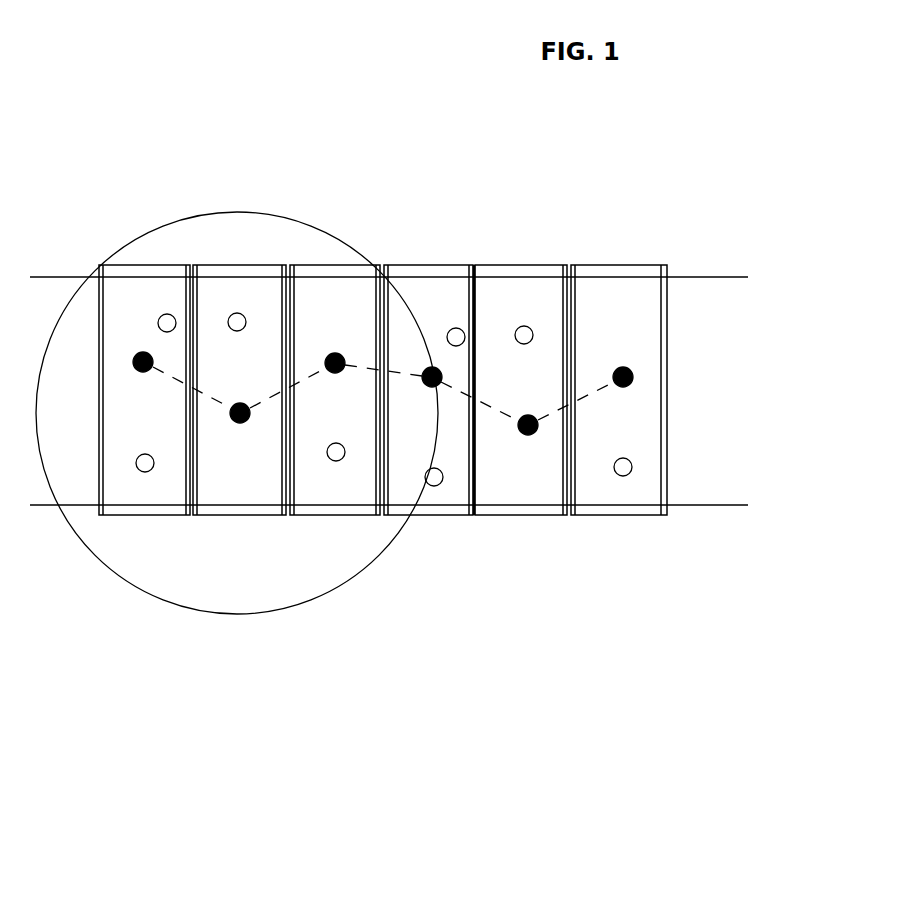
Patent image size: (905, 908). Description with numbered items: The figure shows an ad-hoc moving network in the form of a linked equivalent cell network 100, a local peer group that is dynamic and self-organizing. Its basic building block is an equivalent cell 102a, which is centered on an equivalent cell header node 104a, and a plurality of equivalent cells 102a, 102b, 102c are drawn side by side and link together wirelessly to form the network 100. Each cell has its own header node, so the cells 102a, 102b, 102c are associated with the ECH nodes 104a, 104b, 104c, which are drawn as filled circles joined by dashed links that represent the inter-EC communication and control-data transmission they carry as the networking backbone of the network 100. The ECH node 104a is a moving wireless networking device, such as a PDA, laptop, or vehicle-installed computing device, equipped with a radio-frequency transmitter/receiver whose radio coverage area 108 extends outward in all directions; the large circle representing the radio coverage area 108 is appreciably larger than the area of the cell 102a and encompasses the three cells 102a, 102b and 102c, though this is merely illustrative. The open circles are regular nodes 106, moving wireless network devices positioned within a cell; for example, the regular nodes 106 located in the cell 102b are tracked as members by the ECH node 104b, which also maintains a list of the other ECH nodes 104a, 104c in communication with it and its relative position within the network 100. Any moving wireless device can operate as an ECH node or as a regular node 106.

The linked equivalent cell network 100 is at (389, 359).
The equivalent cell 102a is at (245, 285).
The equivalent cell 102b is at (117, 290).
The equivalent cell 102c is at (360, 493).
The equivalent cell header node 104a is at (234, 423).
The ECH node 104b is at (143, 352).
The ECH node 104c is at (336, 353).
The regular node 106 is at (141, 470).
The radio coverage area 108 is at (278, 592).